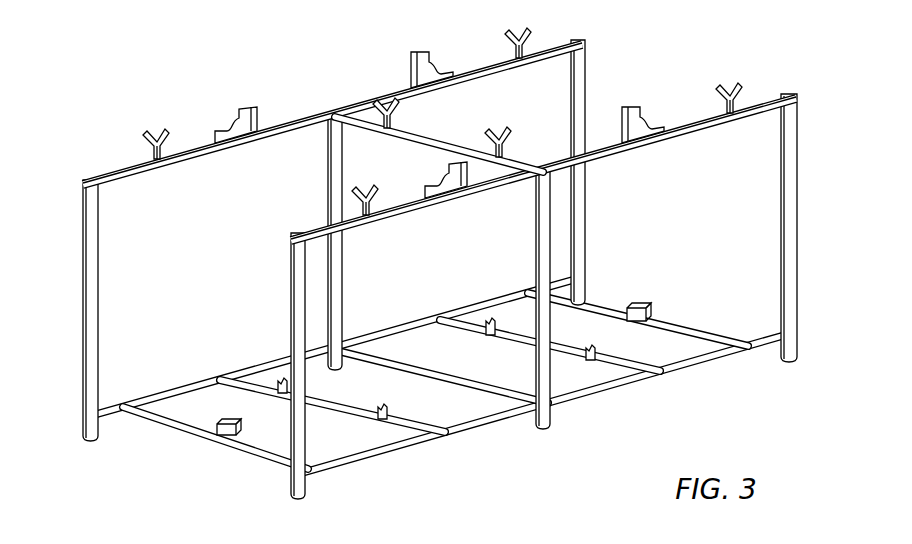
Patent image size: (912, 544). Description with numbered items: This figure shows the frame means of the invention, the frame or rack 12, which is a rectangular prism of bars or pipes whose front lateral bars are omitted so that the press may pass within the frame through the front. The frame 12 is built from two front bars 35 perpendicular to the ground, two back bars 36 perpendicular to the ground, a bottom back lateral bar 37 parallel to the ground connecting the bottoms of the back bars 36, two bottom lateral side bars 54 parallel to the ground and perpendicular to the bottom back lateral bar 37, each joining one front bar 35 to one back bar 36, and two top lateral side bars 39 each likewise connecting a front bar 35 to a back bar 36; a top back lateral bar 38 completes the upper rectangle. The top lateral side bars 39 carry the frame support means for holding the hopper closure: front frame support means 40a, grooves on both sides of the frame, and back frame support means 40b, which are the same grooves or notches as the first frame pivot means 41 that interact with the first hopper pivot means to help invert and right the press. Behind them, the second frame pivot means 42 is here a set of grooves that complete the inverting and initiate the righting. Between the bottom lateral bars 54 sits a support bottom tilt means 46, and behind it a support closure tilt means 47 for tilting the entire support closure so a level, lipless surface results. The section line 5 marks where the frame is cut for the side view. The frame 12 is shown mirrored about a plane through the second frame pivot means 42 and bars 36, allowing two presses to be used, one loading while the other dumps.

The frame or rack 12 is at (272, 40).
The front bars 35 is at (83, 268).
The back bars 36 is at (342, 280).
The bottom back lateral bar 37 is at (455, 374).
The transverse top tube 38 is at (440, 133).
The top lateral side bars 39 is at (399, 218).
The front frame support means 40a is at (158, 128).
The back frame support means 40b is at (226, 120).
The first frame pivot means 41 is at (252, 100).
The second frame pivot means 42 is at (388, 88).
The support bottom tilt means 46 is at (229, 419).
The support closure tilt means 47 is at (280, 376).
The bottom lateral side bars 54 is at (436, 443).
The section line 5— 5 is at (160, 452).